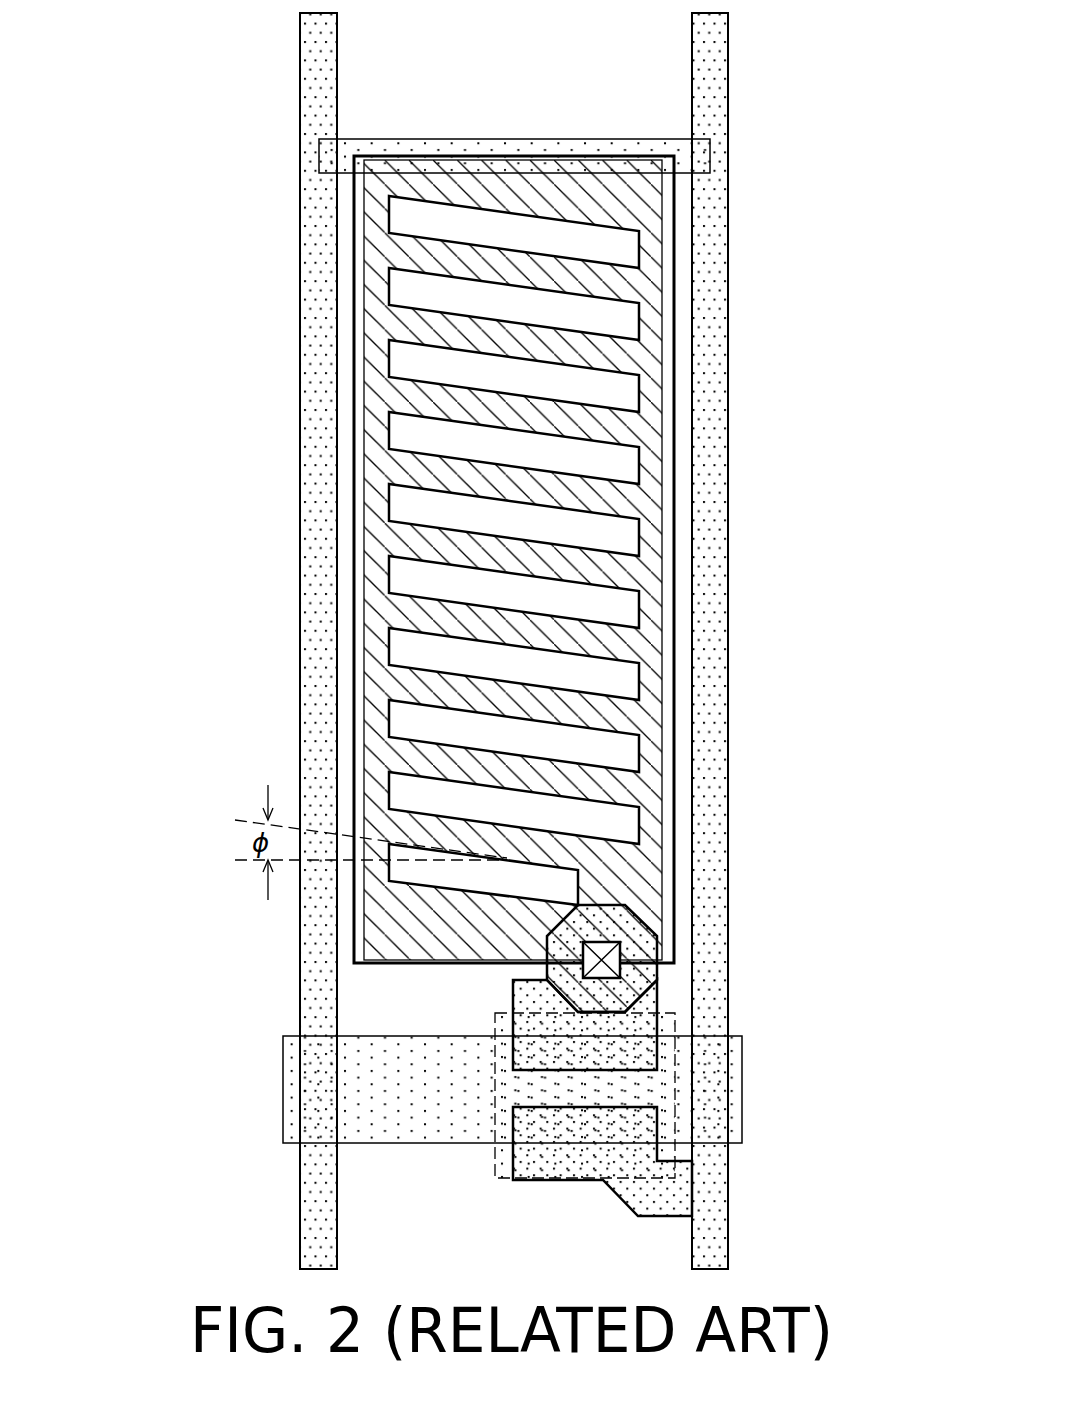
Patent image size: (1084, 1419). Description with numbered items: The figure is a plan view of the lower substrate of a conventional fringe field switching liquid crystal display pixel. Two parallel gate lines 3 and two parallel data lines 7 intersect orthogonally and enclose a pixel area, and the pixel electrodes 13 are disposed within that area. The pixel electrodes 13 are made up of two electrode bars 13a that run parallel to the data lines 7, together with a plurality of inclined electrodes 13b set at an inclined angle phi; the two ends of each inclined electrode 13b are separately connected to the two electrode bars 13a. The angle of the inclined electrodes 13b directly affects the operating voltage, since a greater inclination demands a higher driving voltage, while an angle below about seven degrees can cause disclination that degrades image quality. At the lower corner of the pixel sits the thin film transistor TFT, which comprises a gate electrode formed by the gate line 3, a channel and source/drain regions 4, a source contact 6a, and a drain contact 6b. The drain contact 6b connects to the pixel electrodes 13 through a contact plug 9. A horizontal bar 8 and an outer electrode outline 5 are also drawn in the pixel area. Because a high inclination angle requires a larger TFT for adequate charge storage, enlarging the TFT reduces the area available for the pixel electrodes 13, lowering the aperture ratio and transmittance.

The gate line 3 is at (290, 1085).
The channel and source/drain regions 4 is at (638, 1088).
The pixel electrode 5 is at (674, 480).
The source contact 6a is at (640, 1123).
The drain contact 6b is at (640, 1048).
The data line 7 is at (320, 333).
The common line 8 is at (701, 156).
The contact plug 9 is at (608, 958).
The pixel electrode 13 is at (388, 687).
The electrode bar 13a is at (378, 622).
The inclined electrode 13b is at (487, 479).
The thin film transistor TFT is at (519, 709).